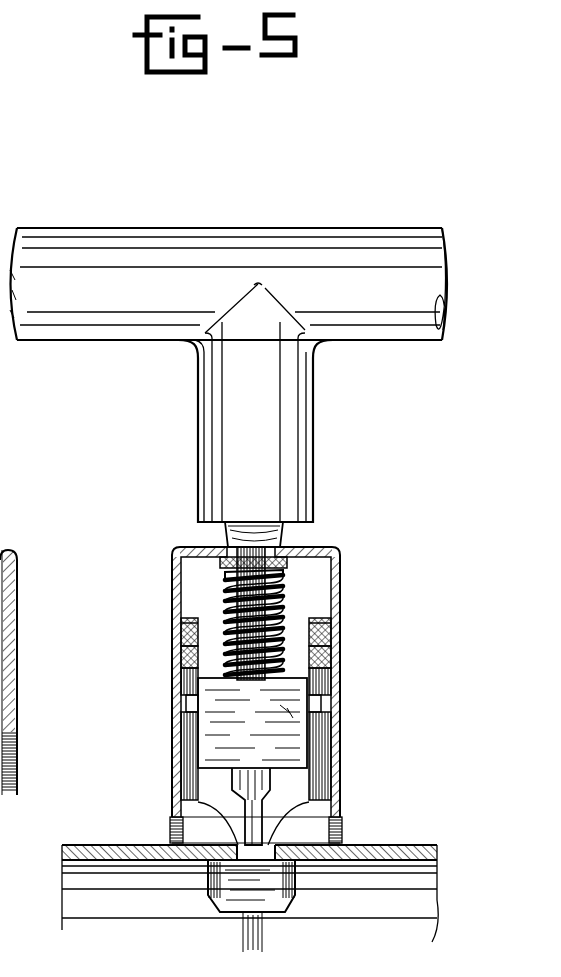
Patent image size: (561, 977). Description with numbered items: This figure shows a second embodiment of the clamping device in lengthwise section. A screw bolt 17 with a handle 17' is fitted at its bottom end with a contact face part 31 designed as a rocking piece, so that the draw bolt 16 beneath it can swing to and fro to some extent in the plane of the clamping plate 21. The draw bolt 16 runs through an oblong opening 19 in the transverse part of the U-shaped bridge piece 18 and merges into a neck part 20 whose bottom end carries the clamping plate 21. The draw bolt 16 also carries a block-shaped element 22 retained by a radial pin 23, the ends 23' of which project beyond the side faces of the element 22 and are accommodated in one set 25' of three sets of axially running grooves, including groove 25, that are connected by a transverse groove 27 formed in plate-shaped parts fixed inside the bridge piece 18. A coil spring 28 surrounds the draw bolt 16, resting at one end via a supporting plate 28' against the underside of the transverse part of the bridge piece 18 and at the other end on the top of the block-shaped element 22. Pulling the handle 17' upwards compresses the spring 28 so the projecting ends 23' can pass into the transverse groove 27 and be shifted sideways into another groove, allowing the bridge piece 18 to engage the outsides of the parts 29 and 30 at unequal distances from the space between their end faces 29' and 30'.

The handle 17' is at (228, 257).
The screw bolt 17 is at (271, 402).
The contact face part 31 is at (226, 541).
The bridge piece 18 is at (314, 549).
The oblong opening 19 is at (222, 563).
The draw bolt 16 is at (272, 582).
The coil spring 28 is at (305, 625).
The supporting plate 28' is at (204, 590).
The set of axially running grooves 25' is at (196, 672).
The transverse groove 27 is at (338, 663).
The projecting ends of pin 23' is at (287, 681).
The radial pin 23 is at (286, 708).
The block-shaped element 22 is at (172, 729).
The axially running groove 25 is at (284, 756).
The neck part 20 is at (263, 817).
The part 29 is at (250, 871).
The part 30 is at (149, 823).
The end face 30' is at (218, 834).
The end face 29' is at (289, 834).
The clamping plate 21 is at (297, 896).